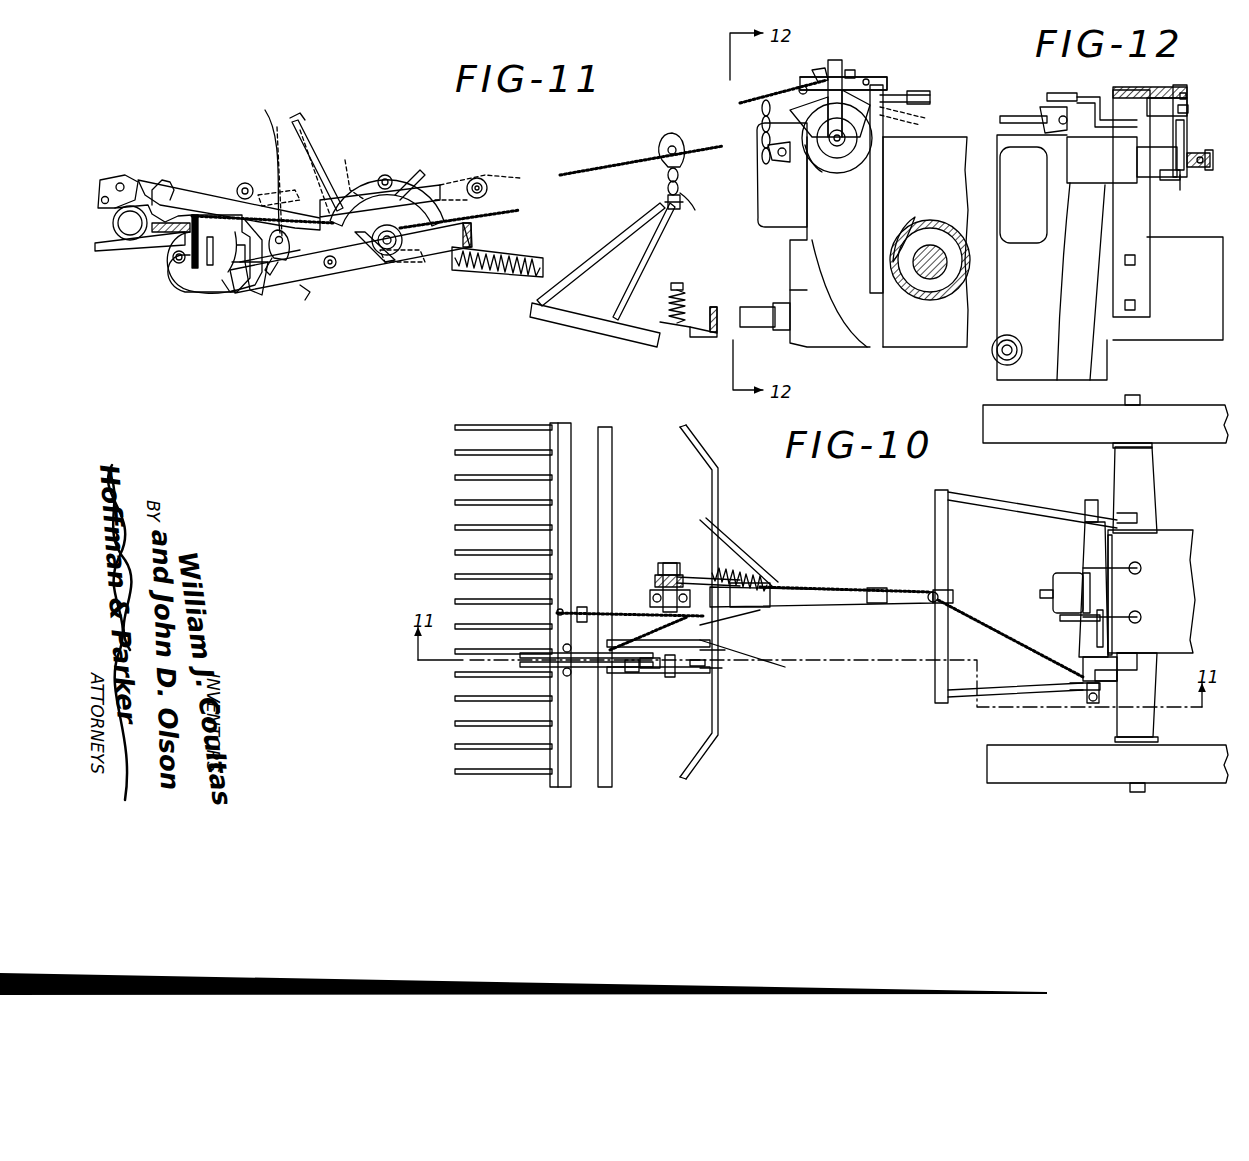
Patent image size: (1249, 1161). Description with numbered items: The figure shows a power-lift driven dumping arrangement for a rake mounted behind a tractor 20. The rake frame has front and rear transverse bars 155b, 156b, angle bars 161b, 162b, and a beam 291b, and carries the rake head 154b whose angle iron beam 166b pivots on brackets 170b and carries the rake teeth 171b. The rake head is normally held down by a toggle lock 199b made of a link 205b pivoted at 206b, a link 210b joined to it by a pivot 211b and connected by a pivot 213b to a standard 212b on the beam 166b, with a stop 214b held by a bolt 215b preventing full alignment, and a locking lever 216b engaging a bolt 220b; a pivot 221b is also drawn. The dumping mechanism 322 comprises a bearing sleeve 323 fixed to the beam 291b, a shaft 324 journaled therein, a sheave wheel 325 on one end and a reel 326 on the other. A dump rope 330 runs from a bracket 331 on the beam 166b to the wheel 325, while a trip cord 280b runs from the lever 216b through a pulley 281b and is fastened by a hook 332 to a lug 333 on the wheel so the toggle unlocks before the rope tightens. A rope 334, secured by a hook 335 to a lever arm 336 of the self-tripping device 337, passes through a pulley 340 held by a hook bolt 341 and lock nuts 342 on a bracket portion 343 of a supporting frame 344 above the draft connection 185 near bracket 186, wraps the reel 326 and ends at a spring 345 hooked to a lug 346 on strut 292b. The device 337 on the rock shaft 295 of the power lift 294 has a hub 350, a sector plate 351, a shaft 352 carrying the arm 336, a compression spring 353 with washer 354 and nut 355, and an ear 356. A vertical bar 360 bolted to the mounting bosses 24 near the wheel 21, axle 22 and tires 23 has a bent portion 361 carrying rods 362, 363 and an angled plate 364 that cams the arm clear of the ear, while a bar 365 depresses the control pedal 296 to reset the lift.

In FIG. 11, the tractor 20 is at (878, 355).
In FIG. 12, the tractor 20 is at (1180, 340).
In FIG. 10, the tractor 20 is at (1200, 530).
In FIG. 11, the wheel spindle 21 is at (915, 290).
In FIG. 12, the wheel spindle 21 is at (1168, 320).
In FIG. 10, the wheel spindle 21 is at (1145, 485).
In FIG. 11, the axle 22 is at (932, 280).
In FIG. 10, the tire 23 is at (1070, 443).
In FIG. 11, the implement mounting bosses 24 is at (900, 235).
In FIG. 10, the implement mounting bosses 24 is at (1150, 520).
In FIG. 11, the rake head 154b is at (132, 300).
In FIG. 10, the rake head 154b is at (530, 422).
In FIG. 11, the front transverse bar 155b is at (470, 235).
In FIG. 10, the front transverse bar 155b is at (705, 480).
In FIG. 11, the rear transverse bar 156b is at (262, 272).
In FIG. 10, the rear transverse bar 156b is at (606, 460).
In FIG. 11, the angle bar 161b is at (300, 285).
In FIG. 10, the angle bar 161b is at (725, 650).
In FIG. 10, the angle bar 162b is at (722, 668).
In FIG. 11, the angle iron beam 166b is at (228, 282).
In FIG. 10, the angle iron beam 166b is at (558, 490).
In FIG. 11, the brackets 170b is at (182, 297).
In FIG. 10, the brackets 170b is at (595, 690).
In FIG. 11, the rake teeth 171b is at (100, 250).
In FIG. 10, the rake teeth 171b is at (458, 770).
In FIG. 11, the pivotal draft connection 185 is at (690, 300).
In FIG. 10, the pivotal draft connection 185 is at (928, 585).
In FIG. 11, the bracket 186 is at (705, 340).
In FIG. 10, the bracket 186 is at (930, 525).
In FIG. 10, the toggle lock 199b is at (645, 700).
In FIG. 11, the link 205b is at (375, 195).
In FIG. 10, the link 205b is at (645, 665).
In FIG. 10, the pivot 206b is at (667, 678).
In FIG. 11, the link 210b is at (200, 182).
In FIG. 10, the link 210b is at (585, 672).
In FIG. 11, the pivot 211b is at (350, 160).
In FIG. 11, the standard 212b is at (145, 195).
In FIG. 10, the standard 212b is at (568, 650).
In FIG. 11, the pivot 213b is at (118, 178).
In FIG. 10, the pivot 213b is at (560, 670).
In FIG. 11, the stop 214b is at (372, 270).
In FIG. 11, the bolt 215b is at (350, 275).
In FIG. 11, the locking lever 216b is at (300, 118).
In FIG. 10, the locking lever 216b is at (640, 665).
In FIG. 11, the bolt 220b is at (318, 180).
In FIG. 11, the pivot 221b is at (330, 265).
In FIG. 11, the trip cord 280b is at (283, 175).
In FIG. 10, the trip cord 280b is at (665, 632).
In FIG. 11, the pulley 281b is at (275, 270).
In FIG. 11, the beam 291b is at (495, 255).
In FIG. 10, the beam 291b is at (822, 608).
In FIG. 10, the strut 292b is at (780, 607).
In FIG. 11, the tractor power lift 294 is at (838, 165).
In FIG. 12, the tractor power lift 294 is at (1068, 205).
In FIG. 10, the tractor power lift 294 is at (1090, 593).
In FIG. 12, the rock shaft 295 is at (1135, 165).
In FIG. 10, the rock shaft 295 is at (1090, 505).
In FIG. 11, the control pedal 296 is at (935, 105).
In FIG. 12, the control pedal 296 is at (1050, 110).
In FIG. 10, the control pedal 296 is at (1140, 575).
In FIG. 10, the dumping mechanism 322 is at (672, 555).
In FIG. 10, the bearing sleeve 323 is at (700, 590).
In FIG. 11, the shaft 324 is at (420, 268).
In FIG. 10, the shaft 324 is at (656, 598).
In FIG. 11, the sheave wheel 325 is at (410, 210).
In FIG. 10, the sheave wheel 325 is at (760, 615).
In FIG. 10, the reel 326 is at (662, 570).
In FIG. 11, the dump rope 330 is at (245, 190).
In FIG. 10, the dump rope 330 is at (660, 580).
In FIG. 11, the bracket 331 is at (190, 212).
In FIG. 10, the bracket 331 is at (555, 613).
In FIG. 11, the hook 332 is at (382, 185).
In FIG. 11, the lug 333 is at (420, 165).
In FIG. 10, the lug 333 is at (770, 662).
In FIG. 11, the rope 334 is at (570, 178).
In FIG. 10, the rope 334 is at (980, 625).
In FIG. 11, the hook 335 is at (818, 72).
In FIG. 11, the lever arm 336 is at (845, 65).
In FIG. 12, the lever arm 336 is at (1182, 125).
In FIG. 11, the self-tripping device 337 is at (925, 58).
In FIG. 12, the self-tripping device 337 is at (1180, 85).
In FIG. 10, the self-tripping device 337 is at (1075, 700).
In FIG. 11, the pulley 340 is at (665, 135).
In FIG. 11, the hook bolt 341 is at (685, 180).
In FIG. 11, the lock nuts 342 is at (688, 207).
In FIG. 11, the bracket portion 343 is at (675, 212).
In FIG. 11, the supporting frame 344 is at (610, 240).
In FIG. 11, the spring 345 is at (492, 268).
In FIG. 10, the spring 345 is at (738, 575).
In FIG. 10, the apertured lug 346 is at (760, 580).
In FIG. 12, the hub 350 is at (1135, 155).
In FIG. 11, the plate 351 is at (862, 140).
In FIG. 12, the plate 351 is at (1170, 185).
In FIG. 11, the shaft 352 is at (815, 175).
In FIG. 12, the shaft 352 is at (1175, 175).
In FIG. 12, the compression spring 353 is at (1200, 170).
In FIG. 11, the retaining washer 354 is at (762, 127).
In FIG. 12, the retaining washer 354 is at (1190, 155).
In FIG. 11, the nut 355 is at (805, 170).
In FIG. 12, the nut 355 is at (1210, 170).
In FIG. 11, the ear 356 is at (800, 88).
In FIG. 12, the ear 356 is at (1185, 95).
In FIG. 11, the vertical bar 360 is at (872, 220).
In FIG. 12, the vertical bar 360 is at (1135, 240).
In FIG. 11, the rearwardly bent portion 361 is at (865, 77).
In FIG. 12, the rearwardly bent portion 361 is at (1105, 92).
In FIG. 10, the rearwardly bent portion 361 is at (1105, 640).
In FIG. 11, the rod 362 is at (830, 65).
In FIG. 12, the rod 362 is at (1165, 88).
In FIG. 10, the rod 362 is at (1085, 660).
In FIG. 11, the rod 363 is at (868, 80).
In FIG. 12, the rod 363 is at (1140, 88).
In FIG. 10, the rod 363 is at (1115, 680).
In FIG. 11, the plate 364 is at (880, 86).
In FIG. 12, the plate 364 is at (1186, 108).
In FIG. 10, the plate 364 is at (1095, 703).
In FIG. 11, the bar 365 is at (850, 75).
In FIG. 12, the bar 365 is at (1060, 97).
In FIG. 10, the bar 365 is at (1140, 620).